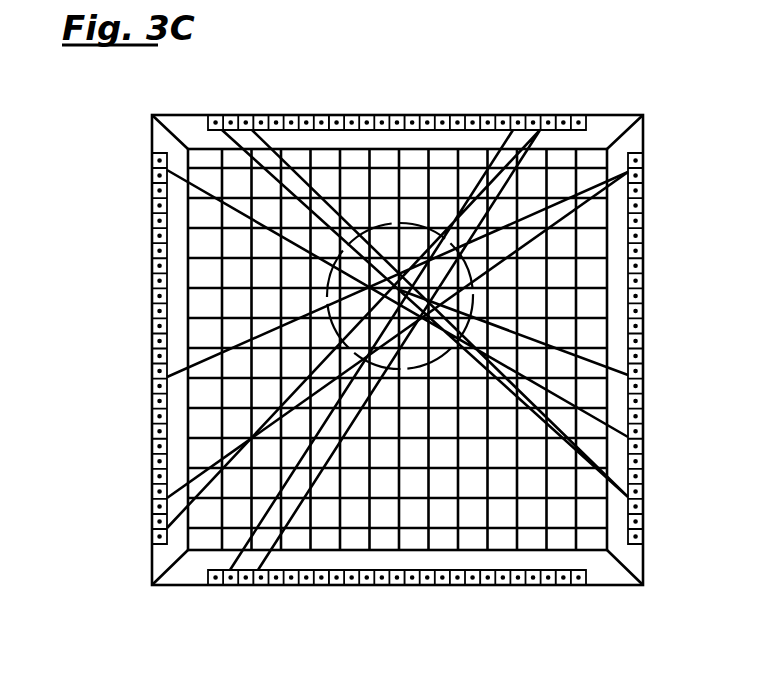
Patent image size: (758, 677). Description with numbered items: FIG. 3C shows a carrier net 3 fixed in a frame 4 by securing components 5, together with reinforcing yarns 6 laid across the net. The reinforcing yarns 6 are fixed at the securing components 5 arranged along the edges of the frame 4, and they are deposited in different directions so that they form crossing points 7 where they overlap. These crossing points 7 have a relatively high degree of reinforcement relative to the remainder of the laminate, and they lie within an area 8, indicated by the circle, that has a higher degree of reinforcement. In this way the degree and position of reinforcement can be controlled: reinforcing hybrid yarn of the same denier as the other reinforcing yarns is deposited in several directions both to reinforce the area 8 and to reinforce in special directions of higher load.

The carrier net 3 is at (588, 160).
The frame 4 is at (611, 563).
The securing components 5 is at (645, 222).
The reinforcing yarns 6 is at (542, 228).
The crossing points 7 is at (645, 378).
The area having a higher degree of reinforcement 8 is at (406, 222).